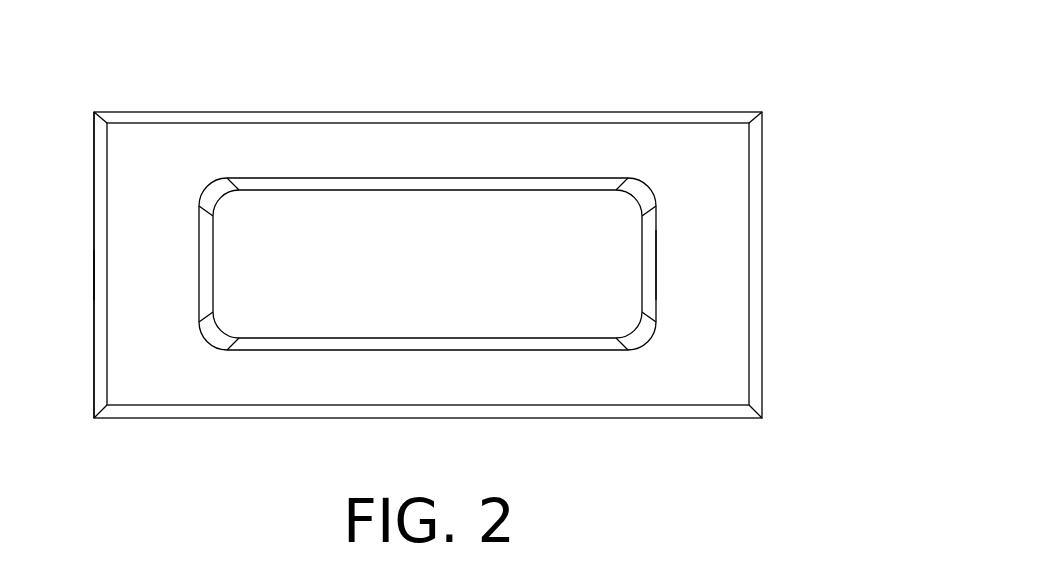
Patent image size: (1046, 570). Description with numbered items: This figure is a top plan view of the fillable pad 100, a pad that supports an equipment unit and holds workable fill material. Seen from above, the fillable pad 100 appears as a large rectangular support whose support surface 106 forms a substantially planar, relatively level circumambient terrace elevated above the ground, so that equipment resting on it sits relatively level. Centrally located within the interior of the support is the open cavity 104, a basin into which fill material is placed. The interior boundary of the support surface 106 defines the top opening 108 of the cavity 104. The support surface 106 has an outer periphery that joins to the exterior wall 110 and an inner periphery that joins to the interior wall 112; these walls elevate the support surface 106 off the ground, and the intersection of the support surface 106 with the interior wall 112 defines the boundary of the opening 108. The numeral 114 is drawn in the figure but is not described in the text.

The fillable pad 100 is at (750, 60).
The open cavity 104 is at (445, 241).
The support surface 106 is at (735, 195).
The top opening 108 is at (649, 290).
The exterior wall 110 is at (98, 138).
The interior wall 112 is at (209, 290).
The frame side wall 114 is at (94, 270).